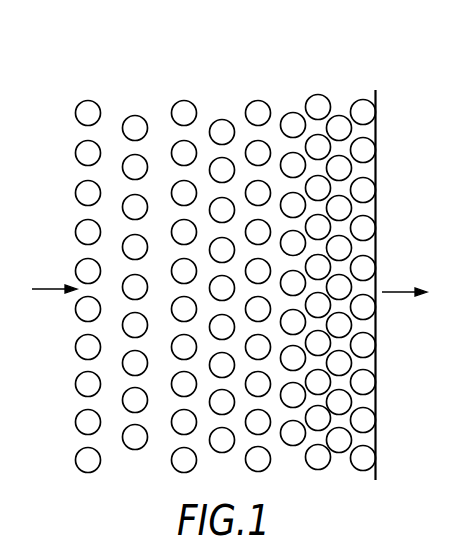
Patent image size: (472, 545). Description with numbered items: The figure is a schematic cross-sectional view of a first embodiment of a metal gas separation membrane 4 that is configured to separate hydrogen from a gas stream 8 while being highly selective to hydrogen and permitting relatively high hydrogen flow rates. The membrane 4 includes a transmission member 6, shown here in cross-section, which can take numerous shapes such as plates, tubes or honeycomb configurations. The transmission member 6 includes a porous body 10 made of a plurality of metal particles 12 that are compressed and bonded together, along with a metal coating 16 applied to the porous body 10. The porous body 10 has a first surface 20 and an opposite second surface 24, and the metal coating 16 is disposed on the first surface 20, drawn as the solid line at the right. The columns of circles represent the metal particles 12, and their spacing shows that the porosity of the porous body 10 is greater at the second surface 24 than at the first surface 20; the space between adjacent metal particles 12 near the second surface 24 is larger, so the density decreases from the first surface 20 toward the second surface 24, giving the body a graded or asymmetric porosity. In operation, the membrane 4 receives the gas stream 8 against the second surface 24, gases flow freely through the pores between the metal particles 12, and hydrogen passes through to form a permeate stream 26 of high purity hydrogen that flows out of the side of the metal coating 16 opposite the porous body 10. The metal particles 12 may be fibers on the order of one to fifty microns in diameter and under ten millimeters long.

The metal gas separation membrane 4 is at (197, 56).
The transmission member 6 is at (281, 91).
The gas stream 8 is at (45, 289).
The porous body 10 is at (159, 128).
The metal particles 12 is at (96, 107).
The metal coating 16 is at (377, 132).
The first surface 20 is at (370, 172).
The second surface 24 is at (86, 403).
The permeate stream 26 is at (395, 292).